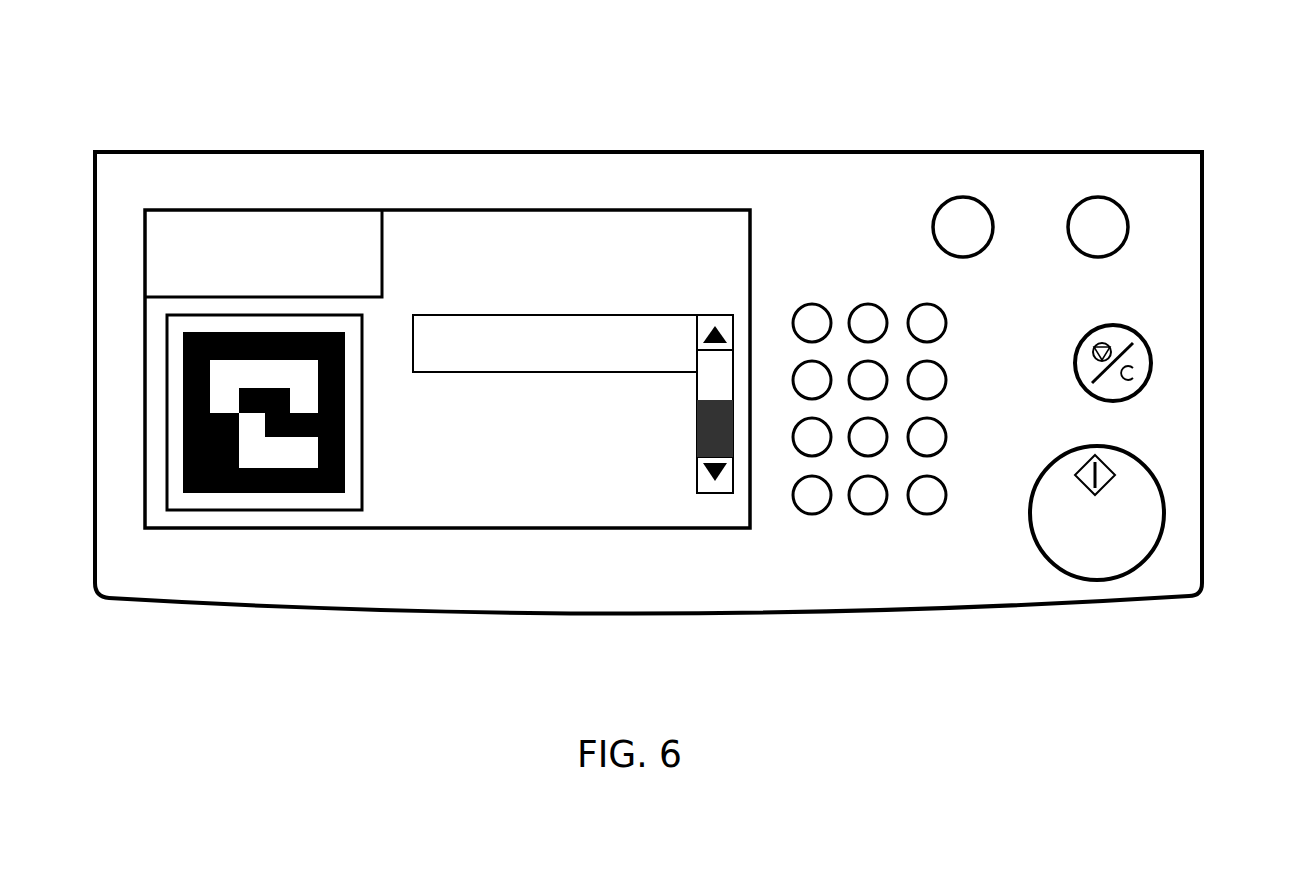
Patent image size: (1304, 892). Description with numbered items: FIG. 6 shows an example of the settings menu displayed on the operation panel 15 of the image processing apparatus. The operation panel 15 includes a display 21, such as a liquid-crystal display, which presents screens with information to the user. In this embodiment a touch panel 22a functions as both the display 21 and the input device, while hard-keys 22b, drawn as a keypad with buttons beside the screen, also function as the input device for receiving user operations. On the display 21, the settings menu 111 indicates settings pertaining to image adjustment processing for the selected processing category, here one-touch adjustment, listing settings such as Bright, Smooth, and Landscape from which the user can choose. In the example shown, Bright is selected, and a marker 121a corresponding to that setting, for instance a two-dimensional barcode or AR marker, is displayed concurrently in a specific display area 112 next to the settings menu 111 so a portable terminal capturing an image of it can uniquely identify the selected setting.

The operation panel 15 is at (1203, 167).
The display 21 is at (693, 213).
The touch panel 22a is at (667, 227).
The hard-keys 22b is at (915, 583).
The settings menu 111 is at (477, 512).
The specific display area 112 is at (248, 510).
The marker 121a is at (300, 493).